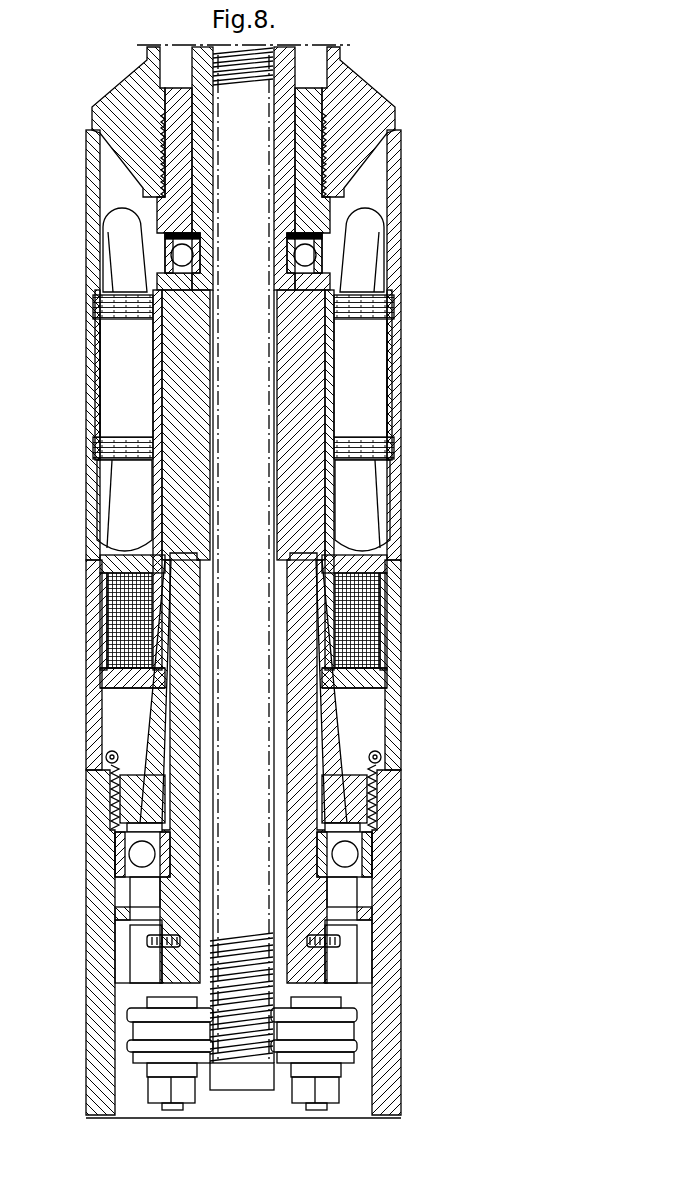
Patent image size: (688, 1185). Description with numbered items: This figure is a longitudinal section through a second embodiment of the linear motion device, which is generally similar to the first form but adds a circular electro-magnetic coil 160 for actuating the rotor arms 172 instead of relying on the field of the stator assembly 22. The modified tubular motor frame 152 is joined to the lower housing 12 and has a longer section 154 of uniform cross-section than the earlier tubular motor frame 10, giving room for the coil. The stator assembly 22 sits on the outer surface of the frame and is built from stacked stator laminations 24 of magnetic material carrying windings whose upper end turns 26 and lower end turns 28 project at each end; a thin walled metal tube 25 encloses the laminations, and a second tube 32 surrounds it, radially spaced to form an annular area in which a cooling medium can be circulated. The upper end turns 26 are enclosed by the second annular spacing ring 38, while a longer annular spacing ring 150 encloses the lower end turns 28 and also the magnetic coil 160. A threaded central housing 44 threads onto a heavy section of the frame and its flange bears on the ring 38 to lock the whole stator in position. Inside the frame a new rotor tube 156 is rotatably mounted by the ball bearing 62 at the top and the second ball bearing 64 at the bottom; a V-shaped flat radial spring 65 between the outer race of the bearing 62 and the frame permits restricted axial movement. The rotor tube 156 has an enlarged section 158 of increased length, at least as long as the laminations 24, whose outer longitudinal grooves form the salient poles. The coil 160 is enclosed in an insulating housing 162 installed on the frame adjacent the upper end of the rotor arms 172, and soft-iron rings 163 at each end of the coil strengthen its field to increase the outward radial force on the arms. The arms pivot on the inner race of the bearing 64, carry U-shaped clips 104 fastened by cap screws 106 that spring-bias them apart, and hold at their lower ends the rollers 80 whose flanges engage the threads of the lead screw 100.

The tubular motor frame 10 is at (293, 174).
The lower housing 12 is at (392, 845).
The stator assembly 22 is at (376, 413).
The stator laminations 24 is at (374, 444).
The thin walled metal tube 25 is at (400, 349).
The upper end turns 26 is at (122, 236).
The lower end turns 28 is at (373, 503).
The second tube 32 is at (402, 373).
The second annular spacing ring 38 is at (90, 192).
The threaded central housing 44 is at (374, 102).
The ball bearing 62 is at (333, 257).
The second ball bearing 64 is at (358, 837).
The V-shaped flat radial spring 65 is at (333, 231).
The rollers 80 is at (352, 1036).
The lead screw 100 is at (253, 47).
The U-shaped clips 104 is at (370, 951).
The cap screws 106 is at (347, 944).
The longer annular spacing ring 150 is at (400, 684).
The modified tubular motor frame 152 is at (158, 697).
The longer section of uniform cross-section 154 is at (381, 573).
The rotor tube 156 is at (293, 393).
The enlarged section 158 is at (318, 349).
The circular electro-magnetic coil 160 is at (384, 617).
The coil housing 162 is at (381, 650).
The rings 163 is at (399, 553).
The rotor arms 172 is at (177, 723).